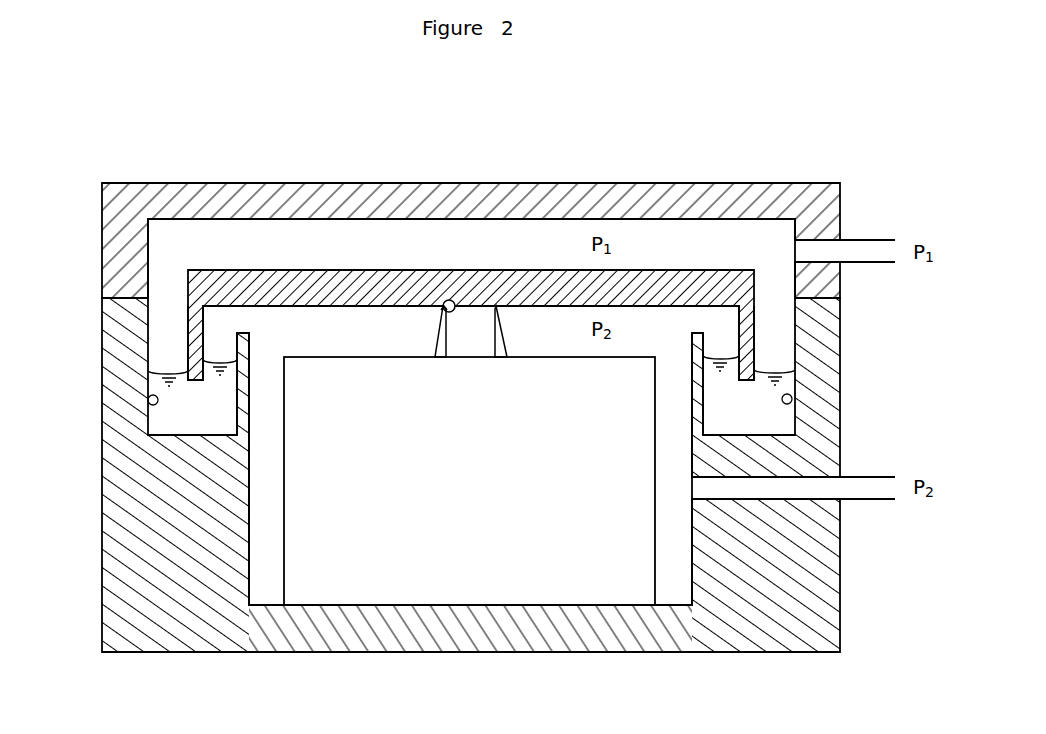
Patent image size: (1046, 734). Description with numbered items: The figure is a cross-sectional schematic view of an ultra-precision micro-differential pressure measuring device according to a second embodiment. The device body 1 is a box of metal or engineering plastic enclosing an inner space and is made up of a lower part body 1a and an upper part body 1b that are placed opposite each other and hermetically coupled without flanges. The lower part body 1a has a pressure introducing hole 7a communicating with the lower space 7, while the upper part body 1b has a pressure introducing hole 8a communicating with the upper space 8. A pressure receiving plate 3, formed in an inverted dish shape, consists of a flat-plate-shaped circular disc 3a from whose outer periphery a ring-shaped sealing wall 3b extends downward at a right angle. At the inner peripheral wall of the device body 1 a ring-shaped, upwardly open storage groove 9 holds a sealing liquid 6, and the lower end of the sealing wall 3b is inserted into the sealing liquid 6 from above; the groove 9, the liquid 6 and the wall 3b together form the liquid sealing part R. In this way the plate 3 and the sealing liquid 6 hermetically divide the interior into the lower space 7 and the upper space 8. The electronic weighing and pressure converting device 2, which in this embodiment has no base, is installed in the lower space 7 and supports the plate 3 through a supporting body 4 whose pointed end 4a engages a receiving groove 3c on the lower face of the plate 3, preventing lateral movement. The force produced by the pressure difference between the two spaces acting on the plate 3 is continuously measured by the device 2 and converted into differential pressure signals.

The device body 1 is at (758, 166).
The lower part body 1a is at (783, 600).
The upper part body 1b is at (643, 200).
The electronic weighing and pressure converting device 2 is at (425, 537).
The pressure receiving plate 3 is at (316, 270).
The flat-plate-shaped circular disc 3a is at (665, 292).
The sealing wall 3b is at (752, 336).
The receiving groove 3c is at (456, 301).
The supporting body 4 is at (437, 344).
The pointed end 4a is at (436, 302).
The sealing liquid 6 is at (222, 372).
The lower space 7 is at (672, 553).
The pressure introducing hole 7a is at (800, 488).
The upper space 8 is at (535, 240).
The pressure introducing hole 8a is at (820, 250).
The sealing liquid storage groove 9 is at (150, 393).
The liquid sealing part R is at (185, 414).